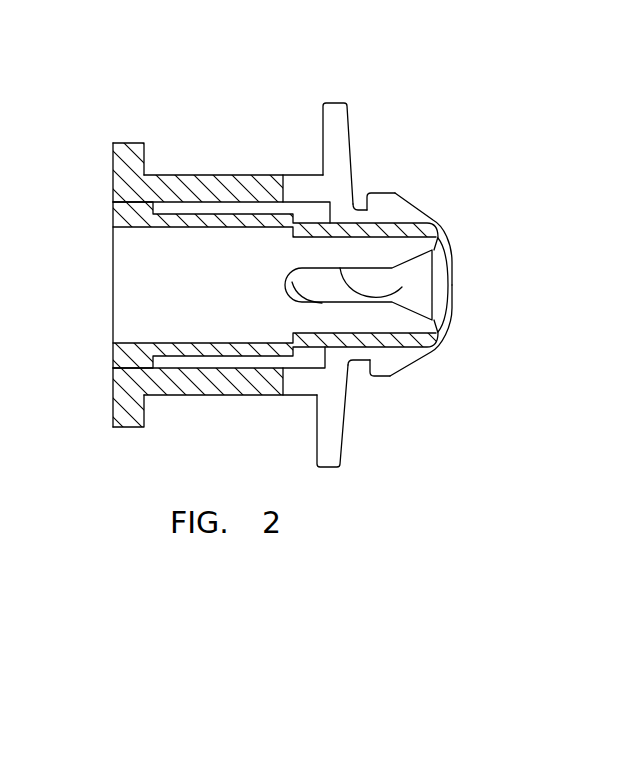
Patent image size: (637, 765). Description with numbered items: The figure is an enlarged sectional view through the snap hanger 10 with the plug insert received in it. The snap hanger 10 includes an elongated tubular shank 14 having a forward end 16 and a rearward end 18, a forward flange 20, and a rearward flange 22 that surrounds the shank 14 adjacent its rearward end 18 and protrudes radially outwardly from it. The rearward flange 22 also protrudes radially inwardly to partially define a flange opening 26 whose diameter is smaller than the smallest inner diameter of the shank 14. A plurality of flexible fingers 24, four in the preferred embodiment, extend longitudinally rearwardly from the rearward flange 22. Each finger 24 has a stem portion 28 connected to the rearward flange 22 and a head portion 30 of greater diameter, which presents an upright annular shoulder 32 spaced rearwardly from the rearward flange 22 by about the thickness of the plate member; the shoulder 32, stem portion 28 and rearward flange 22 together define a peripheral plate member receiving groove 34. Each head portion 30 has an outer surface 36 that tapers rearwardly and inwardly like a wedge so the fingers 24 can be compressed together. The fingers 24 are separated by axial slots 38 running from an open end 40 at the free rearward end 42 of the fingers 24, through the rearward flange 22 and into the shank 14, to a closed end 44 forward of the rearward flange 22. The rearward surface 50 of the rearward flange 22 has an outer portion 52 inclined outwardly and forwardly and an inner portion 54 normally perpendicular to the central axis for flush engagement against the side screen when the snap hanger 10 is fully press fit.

The snap hanger 10 is at (247, 107).
The elongated tubular shank 14 is at (197, 188).
The forward end 16 is at (114, 189).
The rearward end 18 is at (318, 176).
The forward flange 20 is at (127, 143).
The rearward flange 22 is at (335, 101).
The flexible fingers 24 is at (430, 207).
The flange opening 26 is at (342, 238).
The stem portion 28 is at (358, 196).
The head portion 30 is at (395, 208).
The annular shoulder 32 is at (372, 192).
The plate member receiving groove 34 is at (357, 373).
The outer surface 36 is at (438, 221).
The axial slots 38 is at (362, 285).
The open end 40 is at (438, 246).
The free rearward end 42 is at (432, 327).
The closed end 44 is at (318, 305).
The rearward surface 50 is at (358, 147).
The outer portion 52 is at (349, 108).
The inner portion 54 is at (354, 172).